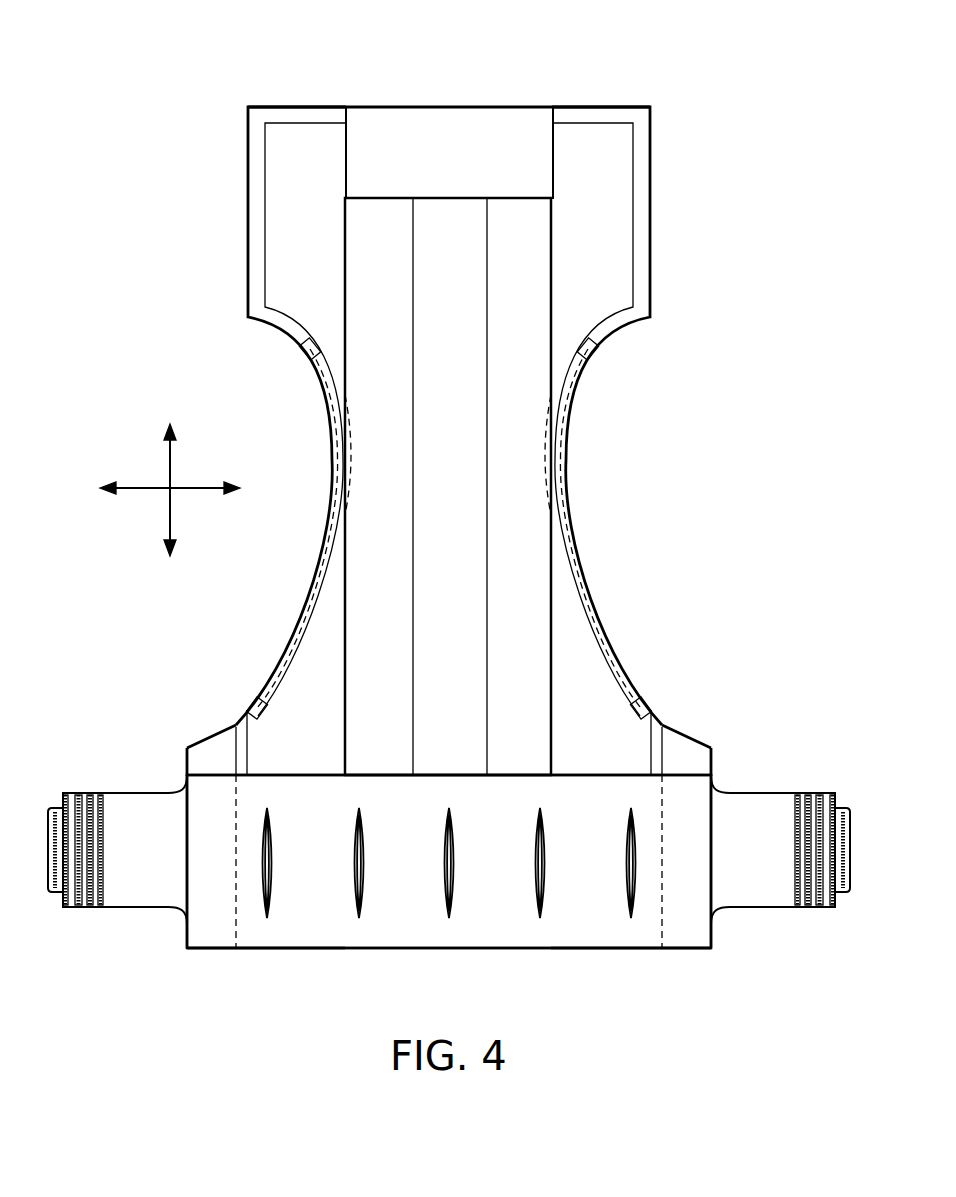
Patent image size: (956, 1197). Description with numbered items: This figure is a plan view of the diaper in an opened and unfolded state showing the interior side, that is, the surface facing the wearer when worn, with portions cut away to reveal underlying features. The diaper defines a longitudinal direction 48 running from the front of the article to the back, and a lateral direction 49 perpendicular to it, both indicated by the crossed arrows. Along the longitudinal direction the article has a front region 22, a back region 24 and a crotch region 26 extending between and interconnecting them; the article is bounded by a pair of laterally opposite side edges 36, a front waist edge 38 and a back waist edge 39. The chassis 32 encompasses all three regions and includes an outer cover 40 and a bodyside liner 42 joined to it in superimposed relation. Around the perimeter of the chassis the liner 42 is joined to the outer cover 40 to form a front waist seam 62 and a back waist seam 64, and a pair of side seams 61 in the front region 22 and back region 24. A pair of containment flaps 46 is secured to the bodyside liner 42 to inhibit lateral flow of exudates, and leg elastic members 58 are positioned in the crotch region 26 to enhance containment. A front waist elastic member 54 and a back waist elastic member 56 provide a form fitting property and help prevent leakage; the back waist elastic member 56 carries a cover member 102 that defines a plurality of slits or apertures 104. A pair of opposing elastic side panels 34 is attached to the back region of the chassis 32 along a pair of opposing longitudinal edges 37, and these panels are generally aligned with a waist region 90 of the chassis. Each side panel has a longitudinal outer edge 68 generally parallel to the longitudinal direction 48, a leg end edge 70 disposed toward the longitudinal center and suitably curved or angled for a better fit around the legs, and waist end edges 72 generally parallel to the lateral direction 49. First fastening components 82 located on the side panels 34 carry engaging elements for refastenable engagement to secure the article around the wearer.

The front region 22 is at (466, 261).
The back region 24 is at (466, 755).
The crotch region 26 is at (466, 456).
The chassis 32 is at (350, 614).
The elastic side panels 34 is at (207, 932).
The side edges 36 is at (320, 549).
The longitudinal edges 37 is at (248, 752).
The front waist edge 38 is at (307, 106).
The back waist edge 39 is at (312, 940).
The outer cover 40 is at (433, 935).
The bodyside liner 42 is at (590, 241).
The containment flaps 46 is at (356, 712).
The longitudinal direction 48 is at (178, 450).
The lateral direction 49 is at (185, 497).
The front waist elastic member 54 is at (420, 133).
The back waist elastic member 56 is at (330, 343).
The leg elastic members 58 is at (628, 652).
The side seams 61 is at (226, 738).
The front waist seam 62 is at (478, 106).
The back waist seam 64 is at (527, 935).
The longitudinal outer edge 68 is at (185, 840).
The leg end edge 70 is at (208, 740).
The waist end edges 72 is at (677, 947).
The first fastening components 82 is at (80, 908).
The waist region 90 is at (433, 840).
The cover member 102 is at (330, 937).
The slits or apertures 104 is at (273, 836).